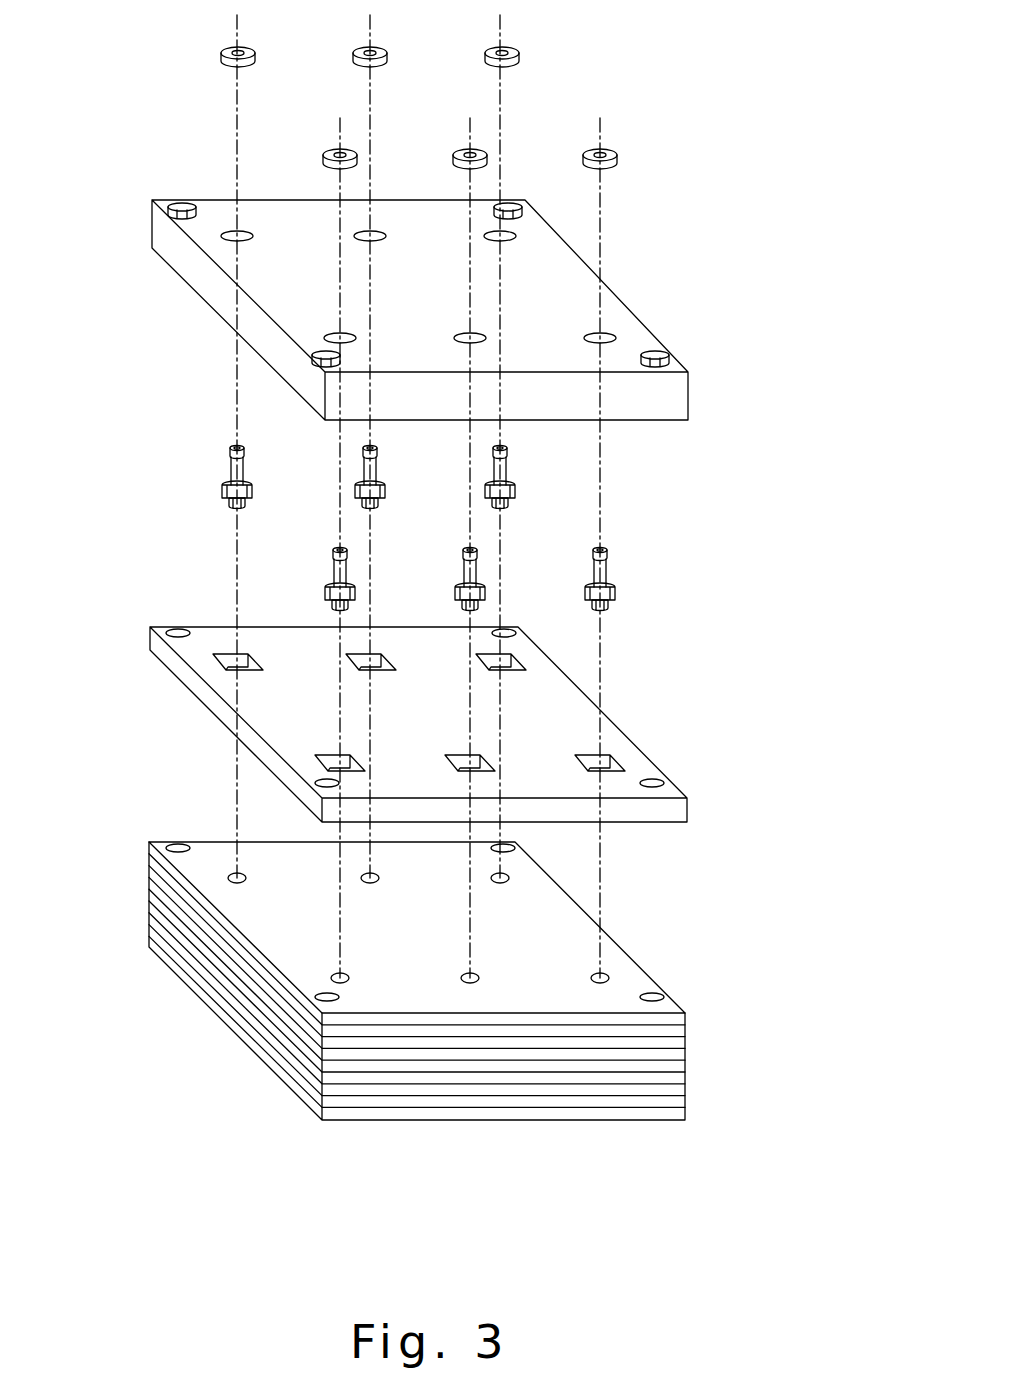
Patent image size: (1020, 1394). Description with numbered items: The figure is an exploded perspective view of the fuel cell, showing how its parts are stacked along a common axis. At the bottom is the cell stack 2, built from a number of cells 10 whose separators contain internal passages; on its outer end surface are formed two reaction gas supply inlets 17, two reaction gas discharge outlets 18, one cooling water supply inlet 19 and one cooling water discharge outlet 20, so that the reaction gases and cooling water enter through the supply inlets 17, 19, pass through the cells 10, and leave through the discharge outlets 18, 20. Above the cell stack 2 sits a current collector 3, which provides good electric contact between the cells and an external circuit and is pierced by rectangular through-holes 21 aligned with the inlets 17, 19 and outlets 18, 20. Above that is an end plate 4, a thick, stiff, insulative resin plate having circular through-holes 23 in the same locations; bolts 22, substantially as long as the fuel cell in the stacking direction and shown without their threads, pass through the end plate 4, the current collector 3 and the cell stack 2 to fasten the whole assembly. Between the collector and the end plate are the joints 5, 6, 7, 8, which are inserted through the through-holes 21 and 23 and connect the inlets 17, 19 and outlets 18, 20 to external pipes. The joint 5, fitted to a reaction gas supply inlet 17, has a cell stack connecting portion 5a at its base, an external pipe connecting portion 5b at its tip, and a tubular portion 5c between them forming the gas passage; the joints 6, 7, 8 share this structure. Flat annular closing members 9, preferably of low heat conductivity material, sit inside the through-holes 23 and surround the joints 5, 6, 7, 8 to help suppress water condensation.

The cell stack 2 is at (441, 1010).
The current collector 3 is at (565, 708).
The end plate 4 is at (565, 335).
The joint 5 is at (377, 451).
The cell stack connecting portion 5a is at (228, 500).
The external pipe connecting portion 5b is at (230, 452).
The tubular portion 5c is at (233, 470).
The joint 6 is at (437, 586).
The joint 7 is at (484, 598).
The joint 8 is at (362, 472).
The closing member 9 is at (618, 150).
The cell 10 is at (565, 928).
The reaction gas supply inlet 17 is at (234, 874).
The reaction gas discharge outlet 18 is at (607, 976).
The cooling water supply inlet 19 is at (478, 986).
The cooling water discharge outlet 20 is at (367, 875).
The rectangular through-hole 21 is at (615, 758).
The bolt 22 is at (670, 355).
The circular through-hole 23 is at (615, 335).